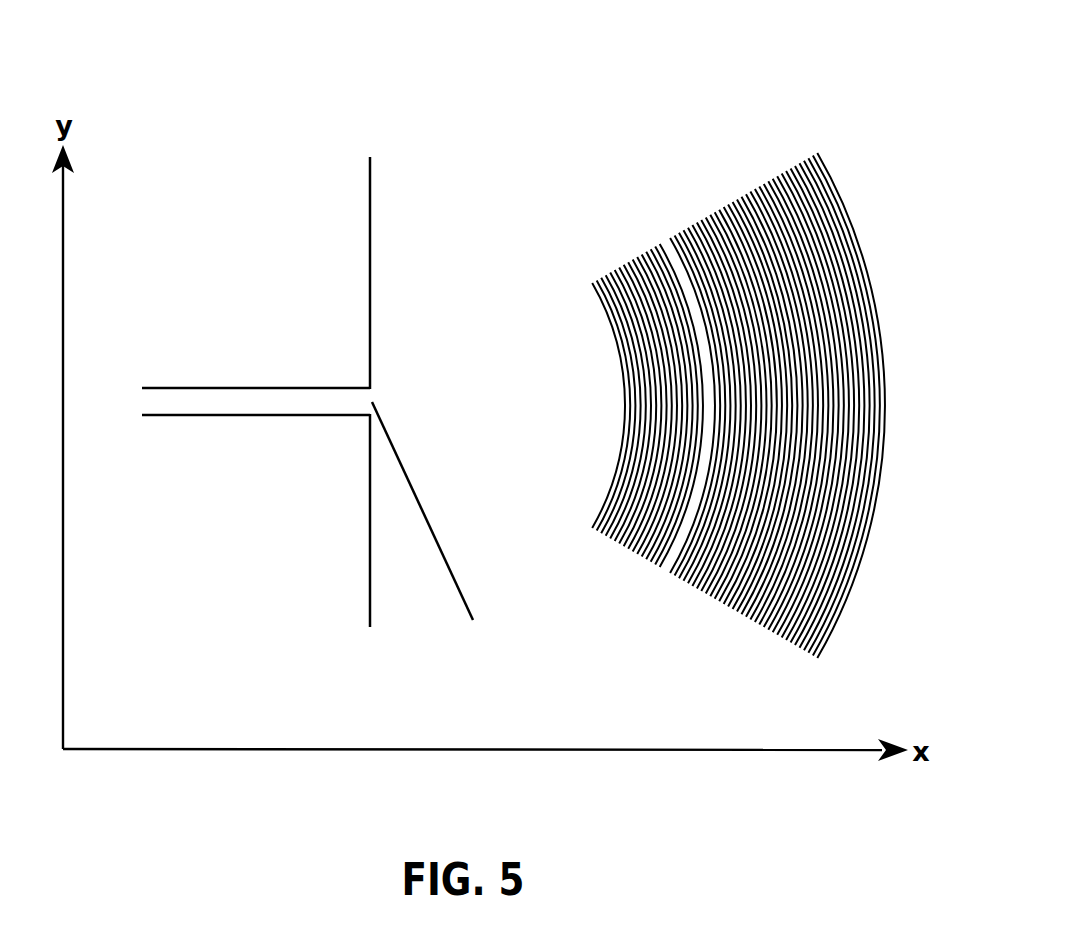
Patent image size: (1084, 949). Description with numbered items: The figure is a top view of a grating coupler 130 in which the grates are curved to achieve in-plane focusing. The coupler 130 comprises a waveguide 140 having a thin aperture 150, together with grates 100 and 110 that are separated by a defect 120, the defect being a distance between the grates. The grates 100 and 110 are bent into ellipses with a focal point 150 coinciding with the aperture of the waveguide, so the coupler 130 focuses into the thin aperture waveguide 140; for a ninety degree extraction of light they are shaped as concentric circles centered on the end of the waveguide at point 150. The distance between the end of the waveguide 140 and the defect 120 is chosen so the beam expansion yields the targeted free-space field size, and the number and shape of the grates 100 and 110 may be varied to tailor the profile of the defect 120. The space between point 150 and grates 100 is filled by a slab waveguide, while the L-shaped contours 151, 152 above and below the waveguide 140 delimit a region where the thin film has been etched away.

The coupler 130 is at (514, 42).
The grates 100 is at (636, 383).
The grates 110 is at (768, 393).
The defect 120 is at (665, 563).
The waveguide 140 is at (305, 403).
The thin aperture 150 is at (438, 535).
The L-shaped contour 151 is at (370, 285).
The L-shaped contour 152 is at (370, 565).